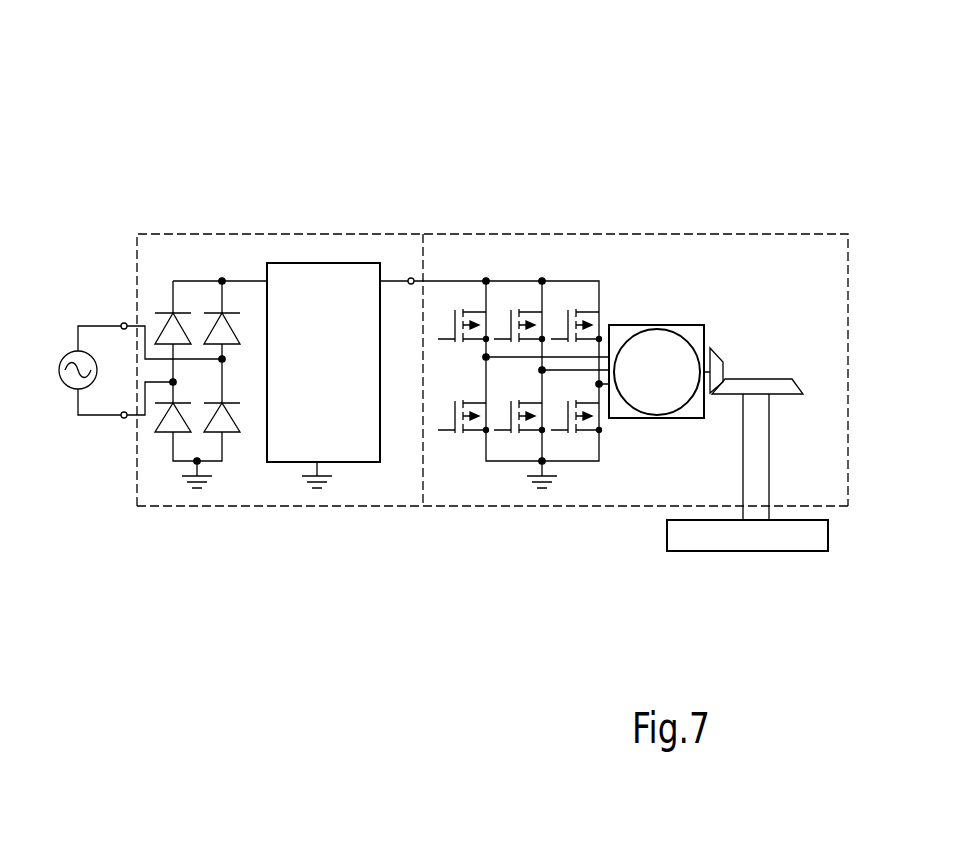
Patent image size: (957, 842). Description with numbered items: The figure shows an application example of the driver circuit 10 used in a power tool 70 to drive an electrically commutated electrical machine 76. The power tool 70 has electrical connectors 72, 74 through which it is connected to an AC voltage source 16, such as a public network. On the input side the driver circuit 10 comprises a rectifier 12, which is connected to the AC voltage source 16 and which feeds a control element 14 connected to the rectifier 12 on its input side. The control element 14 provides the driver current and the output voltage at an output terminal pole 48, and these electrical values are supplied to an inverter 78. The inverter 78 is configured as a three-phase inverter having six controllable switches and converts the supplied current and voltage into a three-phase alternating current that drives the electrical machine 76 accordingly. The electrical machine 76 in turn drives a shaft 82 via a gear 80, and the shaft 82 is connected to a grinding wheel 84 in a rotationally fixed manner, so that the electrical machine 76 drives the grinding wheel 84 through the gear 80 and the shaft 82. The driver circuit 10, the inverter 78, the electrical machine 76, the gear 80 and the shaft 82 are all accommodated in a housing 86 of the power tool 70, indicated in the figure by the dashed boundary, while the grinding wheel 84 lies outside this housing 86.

The driver circuit 10 is at (241, 198).
The rectifier 12 is at (133, 197).
The control element 14 is at (345, 423).
The AC voltage source 16 is at (68, 353).
The output terminal pole 48 is at (410, 285).
The power tool 70 is at (764, 173).
The electrical connector 72 is at (123, 418).
The electrical connector 74 is at (122, 323).
The electrical machine 76 is at (645, 323).
The inverter 78 is at (530, 200).
The gear 80 is at (755, 385).
The shaft 82 is at (764, 445).
The grinding wheel 84 is at (713, 532).
The housing 86 is at (399, 506).